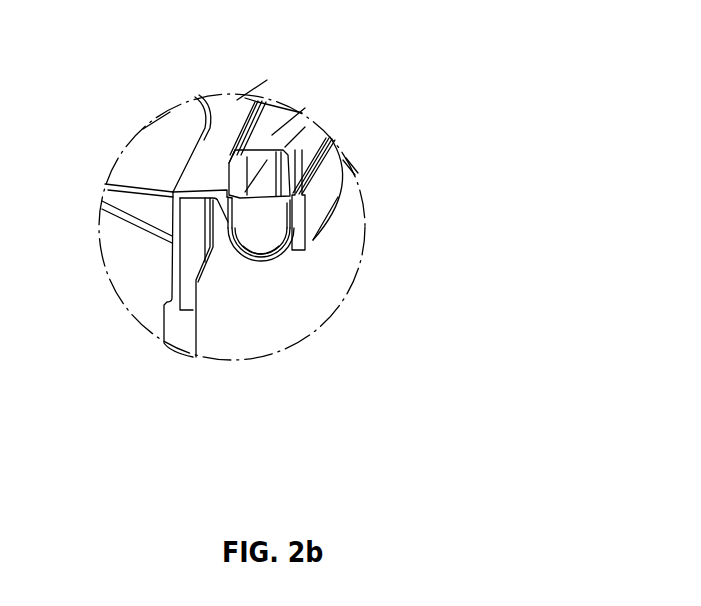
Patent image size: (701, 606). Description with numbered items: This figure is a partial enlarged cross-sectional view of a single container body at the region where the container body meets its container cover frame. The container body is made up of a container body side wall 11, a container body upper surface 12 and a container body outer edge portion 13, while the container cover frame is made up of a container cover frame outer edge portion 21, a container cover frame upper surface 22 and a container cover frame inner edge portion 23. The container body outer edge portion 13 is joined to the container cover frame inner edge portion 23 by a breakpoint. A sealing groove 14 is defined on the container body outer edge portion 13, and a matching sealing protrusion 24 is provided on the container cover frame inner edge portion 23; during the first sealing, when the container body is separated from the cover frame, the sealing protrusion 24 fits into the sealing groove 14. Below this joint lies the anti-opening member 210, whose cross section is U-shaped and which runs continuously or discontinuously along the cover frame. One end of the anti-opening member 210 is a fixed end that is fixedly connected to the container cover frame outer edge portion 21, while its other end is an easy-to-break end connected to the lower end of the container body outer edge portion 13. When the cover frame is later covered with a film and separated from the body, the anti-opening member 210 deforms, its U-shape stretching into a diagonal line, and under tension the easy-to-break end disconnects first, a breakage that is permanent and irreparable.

The container body side wall 11 is at (172, 268).
The container body upper surface 12 is at (205, 137).
The container body outer edge portion 13 is at (228, 218).
The sealing groove 14 is at (232, 200).
The container cover frame outer edge portion 21 is at (303, 250).
The anti-opening member 210 is at (268, 258).
The container cover frame upper surface 22 is at (273, 131).
The container cover frame inner edge portion 23 is at (236, 194).
The sealing protrusion 24 is at (236, 160).